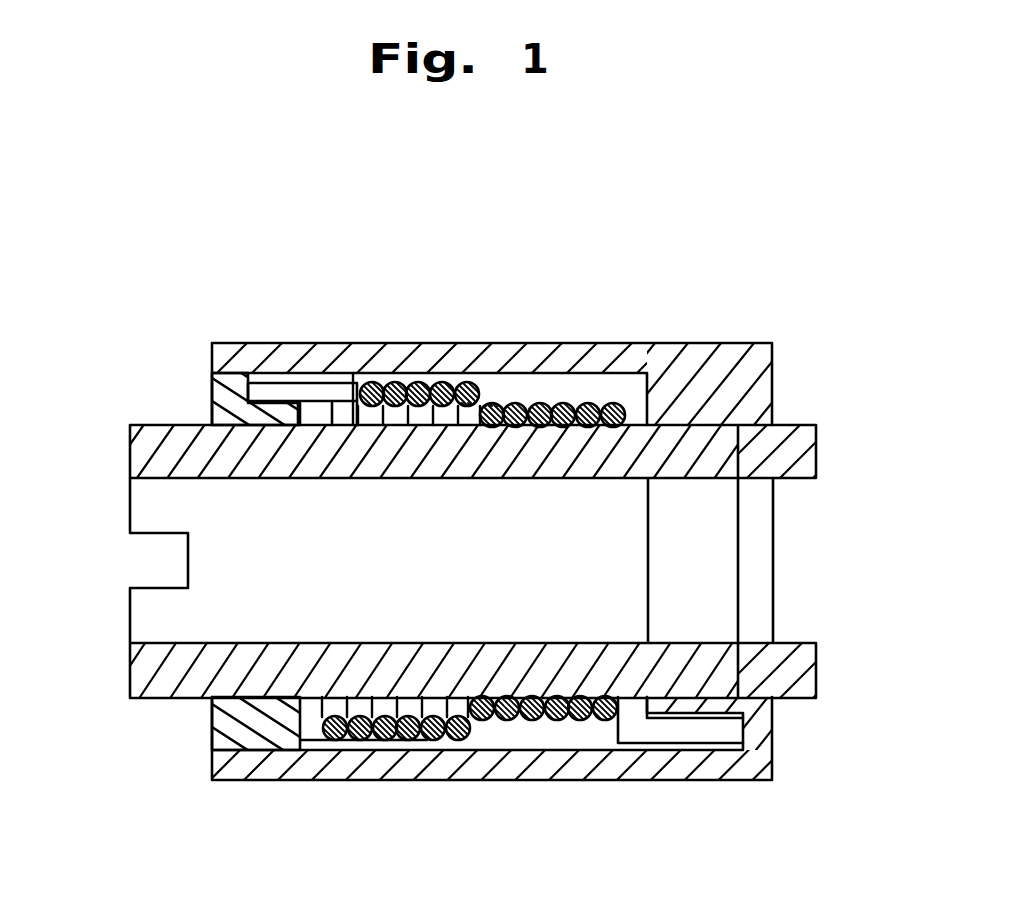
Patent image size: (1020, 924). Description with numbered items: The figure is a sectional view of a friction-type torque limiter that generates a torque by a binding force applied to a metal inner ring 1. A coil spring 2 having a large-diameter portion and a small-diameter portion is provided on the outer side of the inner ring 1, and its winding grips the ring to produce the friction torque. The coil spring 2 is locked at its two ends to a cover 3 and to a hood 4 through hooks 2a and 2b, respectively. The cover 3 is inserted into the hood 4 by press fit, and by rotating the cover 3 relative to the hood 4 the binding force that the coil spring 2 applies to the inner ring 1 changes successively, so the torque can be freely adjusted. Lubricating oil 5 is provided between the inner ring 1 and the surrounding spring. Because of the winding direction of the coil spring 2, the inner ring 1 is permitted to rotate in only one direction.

The inner ring 1 is at (162, 670).
The coil spring 2 is at (425, 745).
The hook 2a is at (278, 390).
The hook 2b is at (708, 732).
The cover 3 is at (243, 730).
The hood 4 is at (692, 763).
The lubricating oil 5 is at (557, 393).